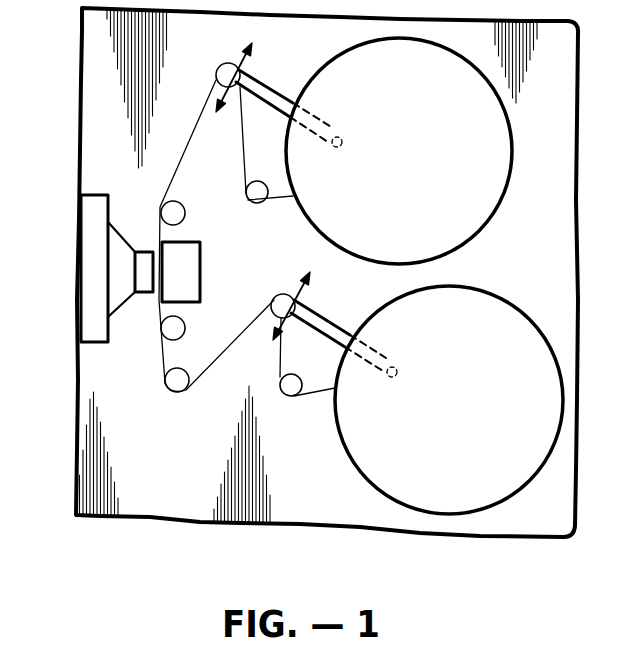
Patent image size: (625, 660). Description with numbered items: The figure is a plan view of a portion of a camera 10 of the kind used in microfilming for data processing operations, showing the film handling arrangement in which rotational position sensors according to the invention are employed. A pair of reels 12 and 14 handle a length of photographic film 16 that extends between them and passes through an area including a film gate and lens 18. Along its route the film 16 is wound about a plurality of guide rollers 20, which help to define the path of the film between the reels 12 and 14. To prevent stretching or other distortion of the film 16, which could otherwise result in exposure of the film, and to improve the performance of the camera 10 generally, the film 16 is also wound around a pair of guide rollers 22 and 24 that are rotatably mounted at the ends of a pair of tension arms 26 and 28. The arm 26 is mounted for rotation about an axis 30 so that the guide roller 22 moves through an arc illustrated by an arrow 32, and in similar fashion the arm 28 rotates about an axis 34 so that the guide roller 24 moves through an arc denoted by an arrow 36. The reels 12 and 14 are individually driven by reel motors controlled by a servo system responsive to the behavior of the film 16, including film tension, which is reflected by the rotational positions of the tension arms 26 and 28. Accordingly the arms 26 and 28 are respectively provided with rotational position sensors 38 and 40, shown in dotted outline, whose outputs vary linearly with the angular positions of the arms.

The camera 10 is at (117, 541).
The reel 12 is at (508, 122).
The reel 14 is at (526, 320).
The photographic film 16 is at (217, 353).
The film gate and lens 18 is at (146, 322).
The guide rollers 20 is at (178, 215).
The guide roller 22 is at (218, 72).
The guide roller 24 is at (272, 302).
The tension arm 26 is at (250, 87).
The tension arm 28 is at (305, 318).
The axis 30 is at (333, 152).
The arrow 32 is at (234, 55).
The axis 34 is at (387, 380).
The arrow 36 is at (291, 288).
The rotational position sensor 38 is at (353, 109).
The rotational position sensor 40 is at (397, 363).